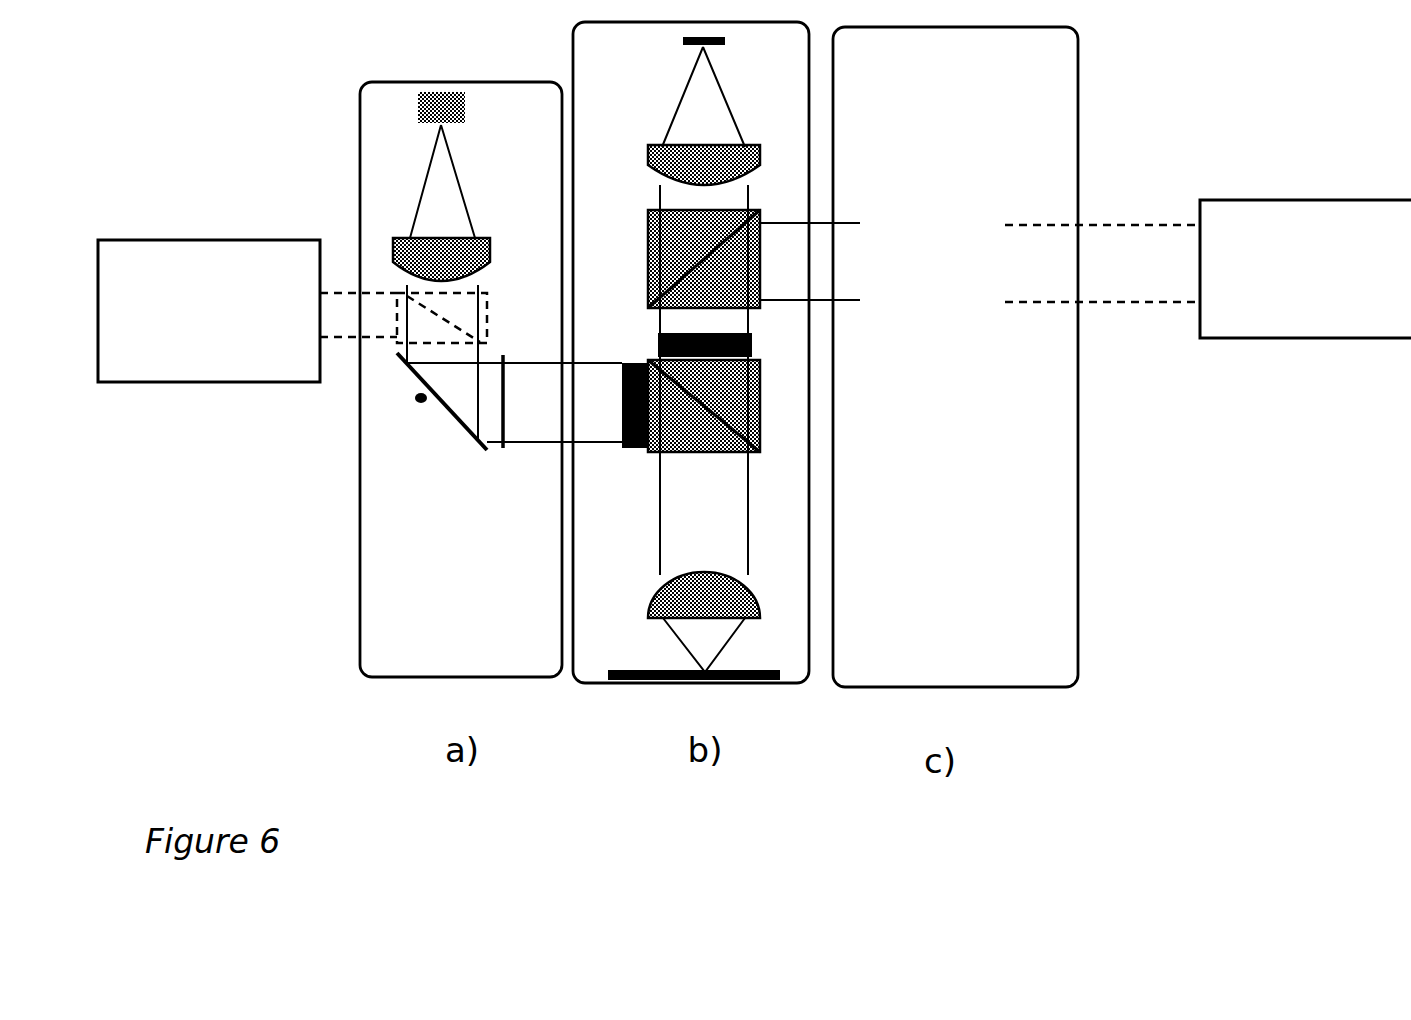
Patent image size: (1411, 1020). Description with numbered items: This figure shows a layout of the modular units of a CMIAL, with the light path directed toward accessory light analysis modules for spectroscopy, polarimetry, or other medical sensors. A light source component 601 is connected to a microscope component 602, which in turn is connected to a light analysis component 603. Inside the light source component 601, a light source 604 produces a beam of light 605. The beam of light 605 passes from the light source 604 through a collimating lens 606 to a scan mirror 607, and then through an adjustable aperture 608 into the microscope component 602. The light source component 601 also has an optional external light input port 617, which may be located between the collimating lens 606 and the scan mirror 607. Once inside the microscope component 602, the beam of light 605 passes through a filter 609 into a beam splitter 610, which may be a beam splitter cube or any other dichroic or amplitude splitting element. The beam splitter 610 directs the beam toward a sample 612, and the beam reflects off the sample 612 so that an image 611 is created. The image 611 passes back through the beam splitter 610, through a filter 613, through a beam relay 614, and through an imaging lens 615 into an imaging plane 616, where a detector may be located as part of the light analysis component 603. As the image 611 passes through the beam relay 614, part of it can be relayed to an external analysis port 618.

The light source component 601 is at (461, 401).
The microscope component 602 is at (691, 374).
The light analysis component 603 is at (955, 381).
The light source 604 is at (477, 163).
The beam of light 605 is at (478, 337).
The collimating lens 606 is at (481, 318).
The scan mirror 607 is at (441, 413).
The adjustable aperture 608 is at (487, 445).
The filter 609 is at (629, 428).
The beam splitter 610 is at (732, 406).
The image 611 is at (733, 586).
The sample 612 is at (711, 649).
The filter 613 is at (738, 341).
The beam relay 614 is at (734, 259).
The imaging lens 615 is at (734, 145).
The imaging plane 616 is at (733, 90).
The optional external light input port 617 is at (247, 345).
The external analysis port 618 is at (1208, 300).